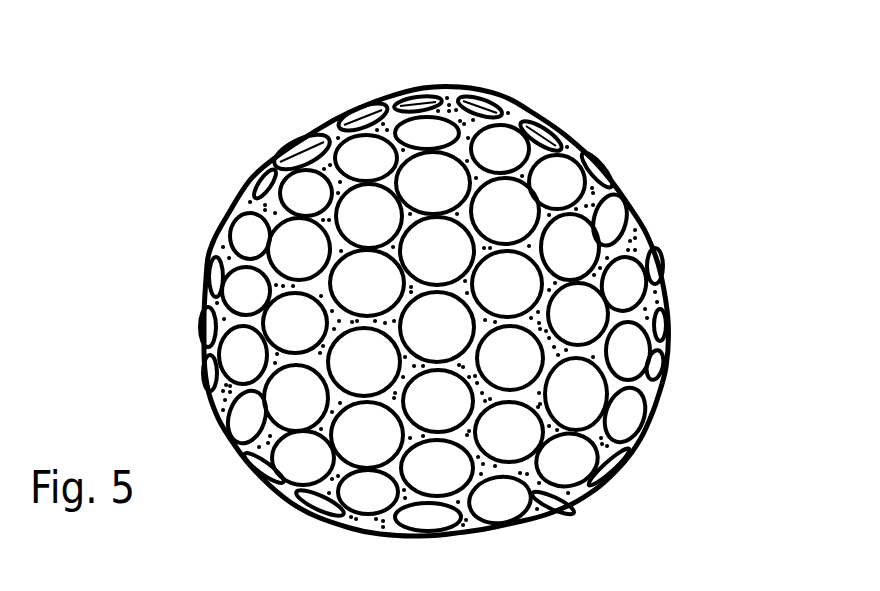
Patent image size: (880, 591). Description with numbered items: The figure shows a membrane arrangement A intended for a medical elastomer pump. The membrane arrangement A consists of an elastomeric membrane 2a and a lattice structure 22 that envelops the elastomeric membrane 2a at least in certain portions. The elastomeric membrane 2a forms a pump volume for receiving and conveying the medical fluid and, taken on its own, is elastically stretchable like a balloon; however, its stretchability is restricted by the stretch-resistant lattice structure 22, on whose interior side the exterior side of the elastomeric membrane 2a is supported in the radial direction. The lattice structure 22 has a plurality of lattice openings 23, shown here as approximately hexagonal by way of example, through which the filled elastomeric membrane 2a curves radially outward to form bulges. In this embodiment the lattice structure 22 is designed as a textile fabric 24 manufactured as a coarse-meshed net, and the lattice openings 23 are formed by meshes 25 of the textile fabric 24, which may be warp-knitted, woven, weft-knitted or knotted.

The membrane arrangement A is at (218, 126).
The elastomeric membrane 2a is at (301, 147).
The lattice structure 22 is at (468, 297).
The textile fabric 24 is at (574, 159).
The lattice openings 23 is at (665, 268).
The meshes 25 is at (580, 308).